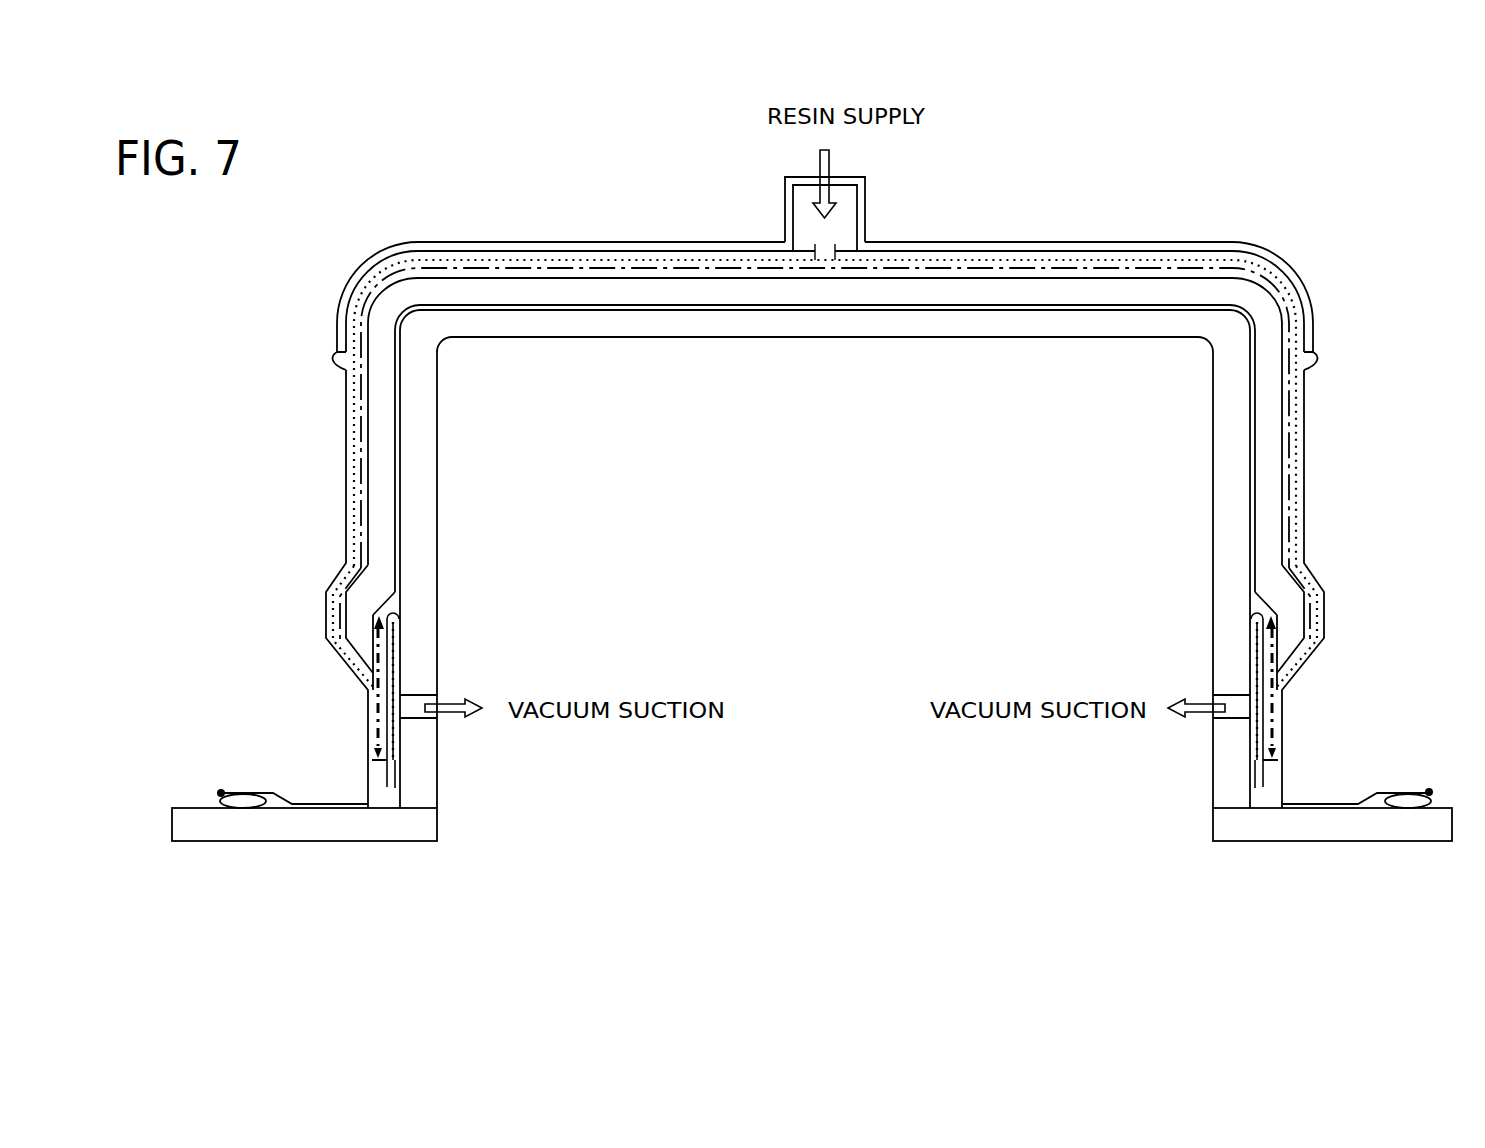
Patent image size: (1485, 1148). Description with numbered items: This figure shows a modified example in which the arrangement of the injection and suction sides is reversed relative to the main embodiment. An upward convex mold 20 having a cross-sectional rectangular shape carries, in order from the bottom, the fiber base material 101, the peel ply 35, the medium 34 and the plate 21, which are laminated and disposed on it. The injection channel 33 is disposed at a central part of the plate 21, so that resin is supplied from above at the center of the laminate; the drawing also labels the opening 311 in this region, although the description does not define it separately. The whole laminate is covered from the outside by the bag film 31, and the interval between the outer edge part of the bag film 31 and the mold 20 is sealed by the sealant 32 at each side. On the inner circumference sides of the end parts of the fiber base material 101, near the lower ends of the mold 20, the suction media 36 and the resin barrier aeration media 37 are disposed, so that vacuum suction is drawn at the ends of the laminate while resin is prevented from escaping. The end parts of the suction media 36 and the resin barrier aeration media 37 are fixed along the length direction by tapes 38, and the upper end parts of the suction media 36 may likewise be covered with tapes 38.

The mold 20 is at (668, 328).
The plate 21 is at (588, 252).
The bag film 31 is at (1305, 473).
The sealant 32 is at (243, 805).
The injection channel 33 is at (862, 213).
The gate opening 311 is at (823, 252).
The medium 34 is at (1303, 387).
The peel ply 35 is at (1300, 440).
The suction medium 36 is at (392, 692).
The resin barrier aeration medium 37 is at (372, 692).
The tape 38 is at (394, 612).
The fiber base material 101 is at (927, 293).